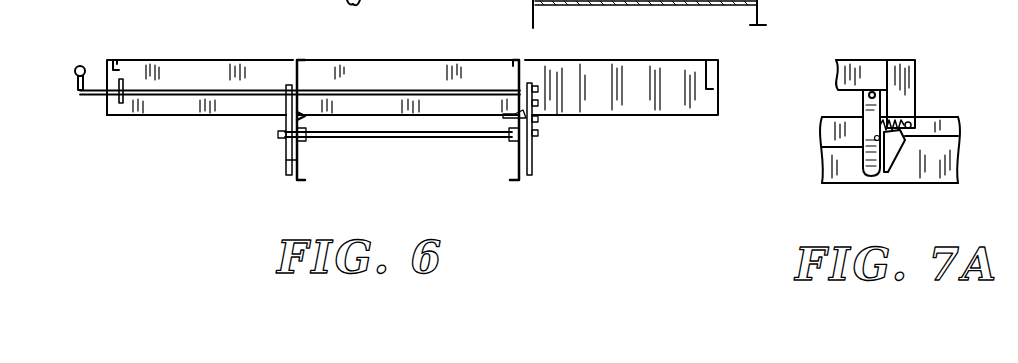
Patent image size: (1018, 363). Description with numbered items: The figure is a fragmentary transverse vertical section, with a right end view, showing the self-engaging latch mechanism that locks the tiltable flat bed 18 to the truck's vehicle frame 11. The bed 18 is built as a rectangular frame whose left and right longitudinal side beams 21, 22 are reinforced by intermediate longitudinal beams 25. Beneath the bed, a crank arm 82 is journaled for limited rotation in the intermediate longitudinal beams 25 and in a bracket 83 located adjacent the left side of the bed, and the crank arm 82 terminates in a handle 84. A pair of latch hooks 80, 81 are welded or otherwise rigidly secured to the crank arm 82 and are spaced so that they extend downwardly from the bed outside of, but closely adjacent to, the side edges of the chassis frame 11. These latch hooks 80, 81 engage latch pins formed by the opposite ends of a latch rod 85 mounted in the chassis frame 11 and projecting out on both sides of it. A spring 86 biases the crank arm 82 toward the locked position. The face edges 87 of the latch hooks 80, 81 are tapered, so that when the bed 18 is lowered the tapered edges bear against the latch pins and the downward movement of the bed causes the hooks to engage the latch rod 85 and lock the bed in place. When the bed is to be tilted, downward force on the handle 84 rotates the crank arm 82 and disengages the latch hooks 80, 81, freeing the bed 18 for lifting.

In FIG. 6, the vehicle frame 11 is at (300, 160).
In FIG. 7A, the vehicle frame 11 is at (840, 184).
In FIG. 6, the tiltable flat bed 18 is at (420, 60).
In FIG. 7A, the tiltable flat bed 18 is at (870, 58).
In FIG. 6, the left longitudinal side beam 21 is at (110, 58).
In FIG. 6, the right longitudinal side beam 22 is at (718, 75).
In FIG. 6, the intermediate longitudinal beam 25 is at (515, 62).
In FIG. 6, the latch hook 80 is at (286, 157).
In FIG. 6, the latch hook 81 is at (535, 162).
In FIG. 7A, the latch hook 81 is at (862, 146).
In FIG. 6, the crank arm 82 is at (186, 97).
In FIG. 7A, the crank arm 82 is at (862, 96).
In FIG. 6, the bracket 83 is at (122, 104).
In FIG. 6, the handle 84 is at (74, 79).
In FIG. 6, the latch rod 85 is at (475, 140).
In FIG. 7A, the latch rod 85 is at (958, 137).
In FIG. 7A, the spring 86 is at (893, 124).
In FIG. 7A, the face edge 87 is at (896, 134).